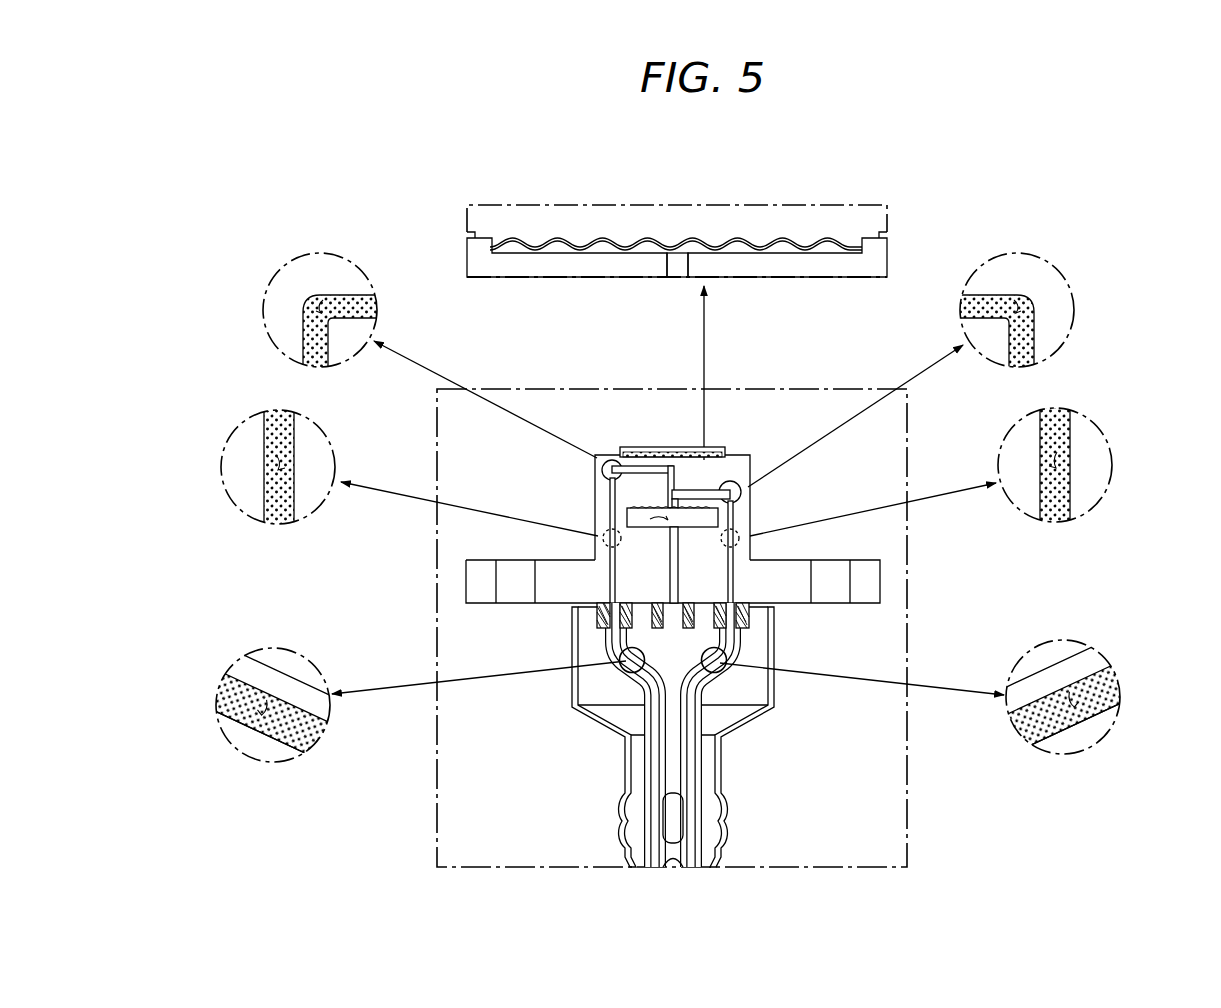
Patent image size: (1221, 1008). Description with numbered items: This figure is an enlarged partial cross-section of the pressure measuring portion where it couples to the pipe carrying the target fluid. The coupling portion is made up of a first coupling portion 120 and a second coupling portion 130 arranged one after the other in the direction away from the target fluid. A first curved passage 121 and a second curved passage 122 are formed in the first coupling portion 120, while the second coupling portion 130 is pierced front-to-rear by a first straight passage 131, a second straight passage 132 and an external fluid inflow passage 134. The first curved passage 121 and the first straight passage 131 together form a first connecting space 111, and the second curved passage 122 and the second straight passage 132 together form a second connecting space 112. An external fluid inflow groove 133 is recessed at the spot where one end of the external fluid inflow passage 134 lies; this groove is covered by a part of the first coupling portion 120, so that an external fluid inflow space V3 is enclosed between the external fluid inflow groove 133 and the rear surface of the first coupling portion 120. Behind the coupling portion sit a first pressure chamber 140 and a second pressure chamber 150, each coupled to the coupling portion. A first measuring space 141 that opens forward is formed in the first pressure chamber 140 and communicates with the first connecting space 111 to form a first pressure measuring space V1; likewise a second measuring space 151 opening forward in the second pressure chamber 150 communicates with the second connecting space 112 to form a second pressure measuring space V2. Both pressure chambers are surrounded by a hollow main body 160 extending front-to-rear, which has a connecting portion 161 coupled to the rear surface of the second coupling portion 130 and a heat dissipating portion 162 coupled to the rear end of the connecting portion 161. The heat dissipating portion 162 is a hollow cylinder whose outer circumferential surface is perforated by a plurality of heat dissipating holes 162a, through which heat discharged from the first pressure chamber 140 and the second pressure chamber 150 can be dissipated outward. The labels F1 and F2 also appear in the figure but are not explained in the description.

The first coupling portion 120 is at (524, 268).
The first connecting space 111 is at (377, 355).
The first curved passage 121 is at (320, 307).
The second connecting space 112 is at (963, 370).
The second curved passage 122 is at (1018, 307).
The second coupling portion 130 is at (665, 487).
The first straight passage 131 is at (282, 464).
The second straight passage 132 is at (1057, 462).
The external fluid inflow groove 133 is at (718, 517).
The external fluid inflow passage 134 is at (679, 576).
The first pressure chamber 140 is at (401, 711).
The first measuring space 141 is at (244, 744).
The second pressure chamber 150 is at (939, 701).
The second measuring space 151 is at (1096, 735).
The hollow main body 160 is at (711, 735).
The connecting portion 161 is at (748, 728).
The heat dissipating portion 162 is at (721, 774).
The heat dissipating holes 162a is at (712, 822).
The first pressure measuring space V1 is at (175, 524).
The second pressure measuring space V2 is at (1157, 519).
The external fluid inflow space V3 is at (658, 512).
The first fluid F1 is at (381, 305).
The second fluid F2 is at (958, 305).